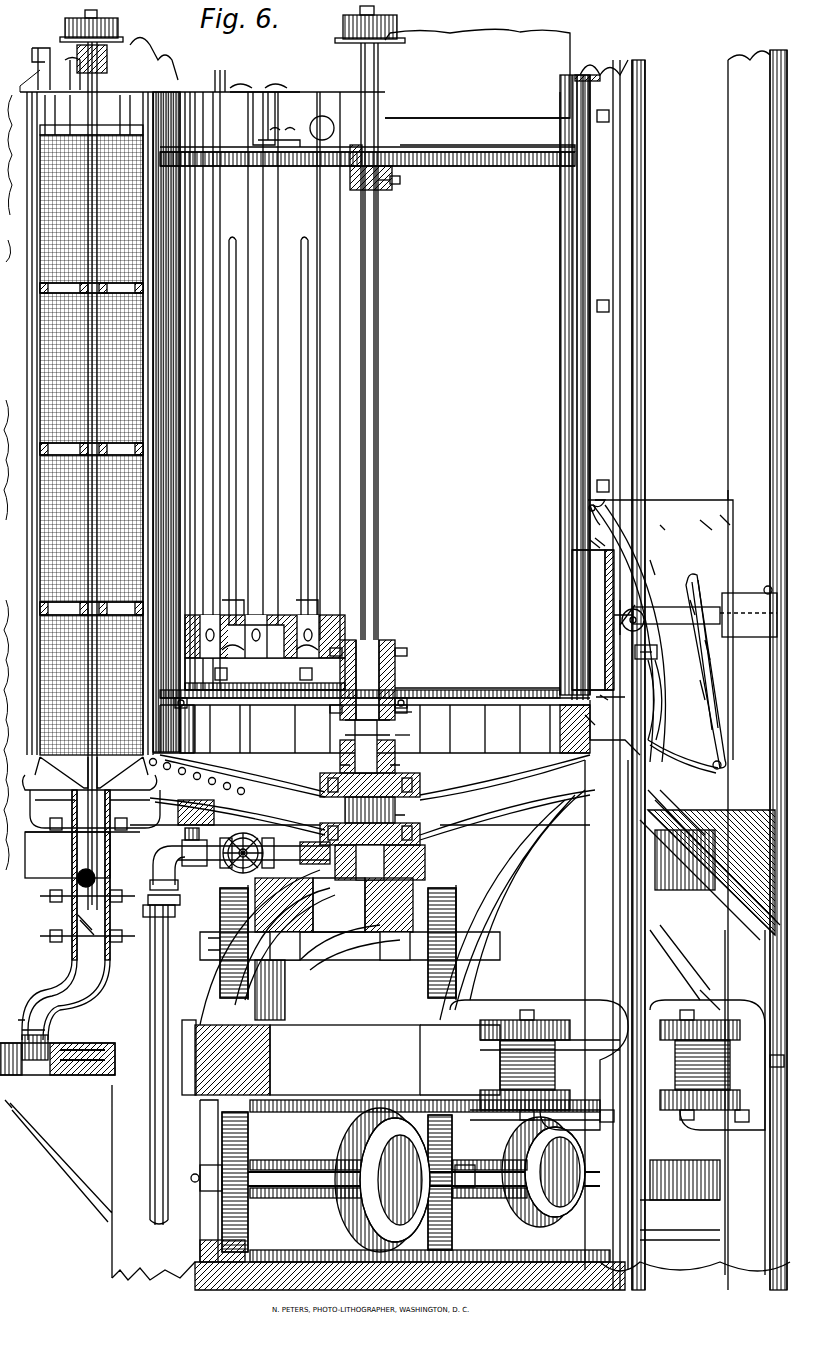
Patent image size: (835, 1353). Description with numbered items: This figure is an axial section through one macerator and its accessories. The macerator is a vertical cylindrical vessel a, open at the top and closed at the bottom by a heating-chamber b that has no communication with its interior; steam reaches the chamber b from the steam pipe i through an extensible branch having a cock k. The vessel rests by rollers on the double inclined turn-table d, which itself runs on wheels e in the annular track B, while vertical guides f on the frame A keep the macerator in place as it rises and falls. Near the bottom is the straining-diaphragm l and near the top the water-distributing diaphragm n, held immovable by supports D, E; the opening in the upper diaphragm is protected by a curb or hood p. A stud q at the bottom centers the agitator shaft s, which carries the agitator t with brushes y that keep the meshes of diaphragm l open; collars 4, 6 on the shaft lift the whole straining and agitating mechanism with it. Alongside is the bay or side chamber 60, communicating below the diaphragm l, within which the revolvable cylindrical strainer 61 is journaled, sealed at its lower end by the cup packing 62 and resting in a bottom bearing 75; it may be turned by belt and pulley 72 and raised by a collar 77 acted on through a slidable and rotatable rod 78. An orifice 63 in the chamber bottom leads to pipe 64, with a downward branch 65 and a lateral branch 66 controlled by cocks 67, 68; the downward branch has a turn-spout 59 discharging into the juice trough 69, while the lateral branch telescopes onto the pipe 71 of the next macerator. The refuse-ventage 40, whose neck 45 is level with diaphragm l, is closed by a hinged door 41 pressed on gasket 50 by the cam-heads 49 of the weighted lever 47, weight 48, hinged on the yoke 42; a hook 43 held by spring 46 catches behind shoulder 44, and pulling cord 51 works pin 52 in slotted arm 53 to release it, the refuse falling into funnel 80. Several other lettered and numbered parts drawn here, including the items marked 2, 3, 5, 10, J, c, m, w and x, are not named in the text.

The bay or side chamber 60 is at (202, 423).
The revolvable cylindrical strainer 61 is at (91, 445).
The belt and pulley 72 is at (232, 24).
The collar 77 is at (79, 468).
The slidable and rotatable rod 78 is at (32, 76).
The second pipe 71 is at (322, 128).
The collar on shaft 2 is at (365, 167).
The collar 6 is at (393, 194).
The tube w is at (230, 427).
The tube 10 is at (303, 428).
The agitator shaft s is at (377, 341).
The vertical cylindrical vessel a is at (522, 387).
The curb or hood p is at (394, 79).
The water-distributing diaphragm n is at (367, 144).
The diaphragm support E is at (257, 80).
The diaphragm support D is at (276, 119).
The vertical guides f is at (458, 663).
The guide block x is at (265, 631).
The brushes y is at (265, 676).
The shaft bearing 3 is at (337, 658).
The agitator t is at (477, 679).
The straining-diaphragm l is at (375, 689).
The bolt 5 is at (409, 716).
The collar 4 is at (401, 733).
The bottom ring m is at (371, 729).
The stud q is at (355, 746).
The annular lip or cup packing 62 is at (195, 779).
The heating-chamber b is at (362, 817).
The bottom bearing 75 is at (90, 773).
The orifice 63 is at (95, 810).
The pipe 64 is at (91, 875).
The lateral branch 66 is at (82, 855).
The valve or cock 68 is at (87, 891).
The downward branch 65 is at (87, 927).
The valve or cock 67 is at (88, 929).
The turn-spout 59 is at (64, 1010).
The trough or conduit 69 is at (57, 1049).
The elbow J is at (160, 875).
The steam pipe i is at (159, 1065).
The cock k is at (254, 848).
The wheels c is at (350, 939).
The turn-table or rotary platform d is at (341, 1057).
The wheels or rollers e is at (395, 1180).
The annular track B is at (451, 1195).
The frame A is at (385, 675).
The discharge-funnel 80 is at (710, 900).
The cord 51 is at (744, 486).
The slotted arm 53 is at (690, 570).
The pin 52 is at (706, 669).
The elastic seat or gasket 50 is at (593, 614).
The refuse-ventage or discharge-opening 40 is at (593, 576).
The wrought-iron yoke 42 is at (626, 631).
The forked or double lever 47 is at (667, 616).
The hinged door 41 is at (617, 629).
The cam-heads 49 is at (635, 651).
The weight 48 is at (748, 611).
The neck 45 is at (593, 682).
The shoulder or projection 44 is at (610, 701).
The hinged hook or latch 43 is at (612, 727).
The stiff spring 46 is at (683, 716).